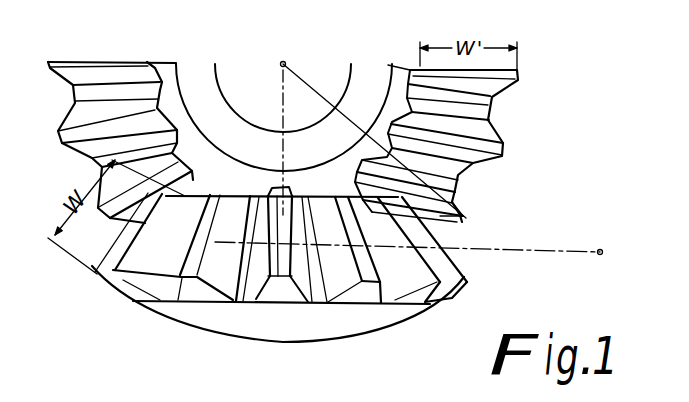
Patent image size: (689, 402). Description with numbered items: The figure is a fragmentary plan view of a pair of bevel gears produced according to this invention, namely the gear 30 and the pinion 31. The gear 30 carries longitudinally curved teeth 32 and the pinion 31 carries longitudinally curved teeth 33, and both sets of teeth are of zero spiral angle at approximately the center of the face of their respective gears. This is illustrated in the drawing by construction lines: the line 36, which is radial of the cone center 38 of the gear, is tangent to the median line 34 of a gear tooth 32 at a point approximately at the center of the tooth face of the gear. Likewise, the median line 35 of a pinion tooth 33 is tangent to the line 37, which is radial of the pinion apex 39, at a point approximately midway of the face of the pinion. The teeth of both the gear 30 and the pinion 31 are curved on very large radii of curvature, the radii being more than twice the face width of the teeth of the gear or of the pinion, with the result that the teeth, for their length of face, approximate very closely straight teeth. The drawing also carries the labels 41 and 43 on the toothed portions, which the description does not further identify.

The gear 30 is at (397, 80).
The pinion 31 is at (378, 312).
The gear tooth 32 is at (498, 156).
The pinion tooth 33 is at (199, 286).
The median line of gear tooth 34 is at (363, 147).
The median line of pinion tooth 35 is at (292, 290).
The radial line of gear 36 is at (465, 220).
The radial line of pinion 37 is at (272, 282).
The cone center of gear 38 is at (286, 62).
The pinion apex 39 is at (409, 146).
The tooth flank 41 is at (298, 278).
The tooth root 43 is at (250, 290).